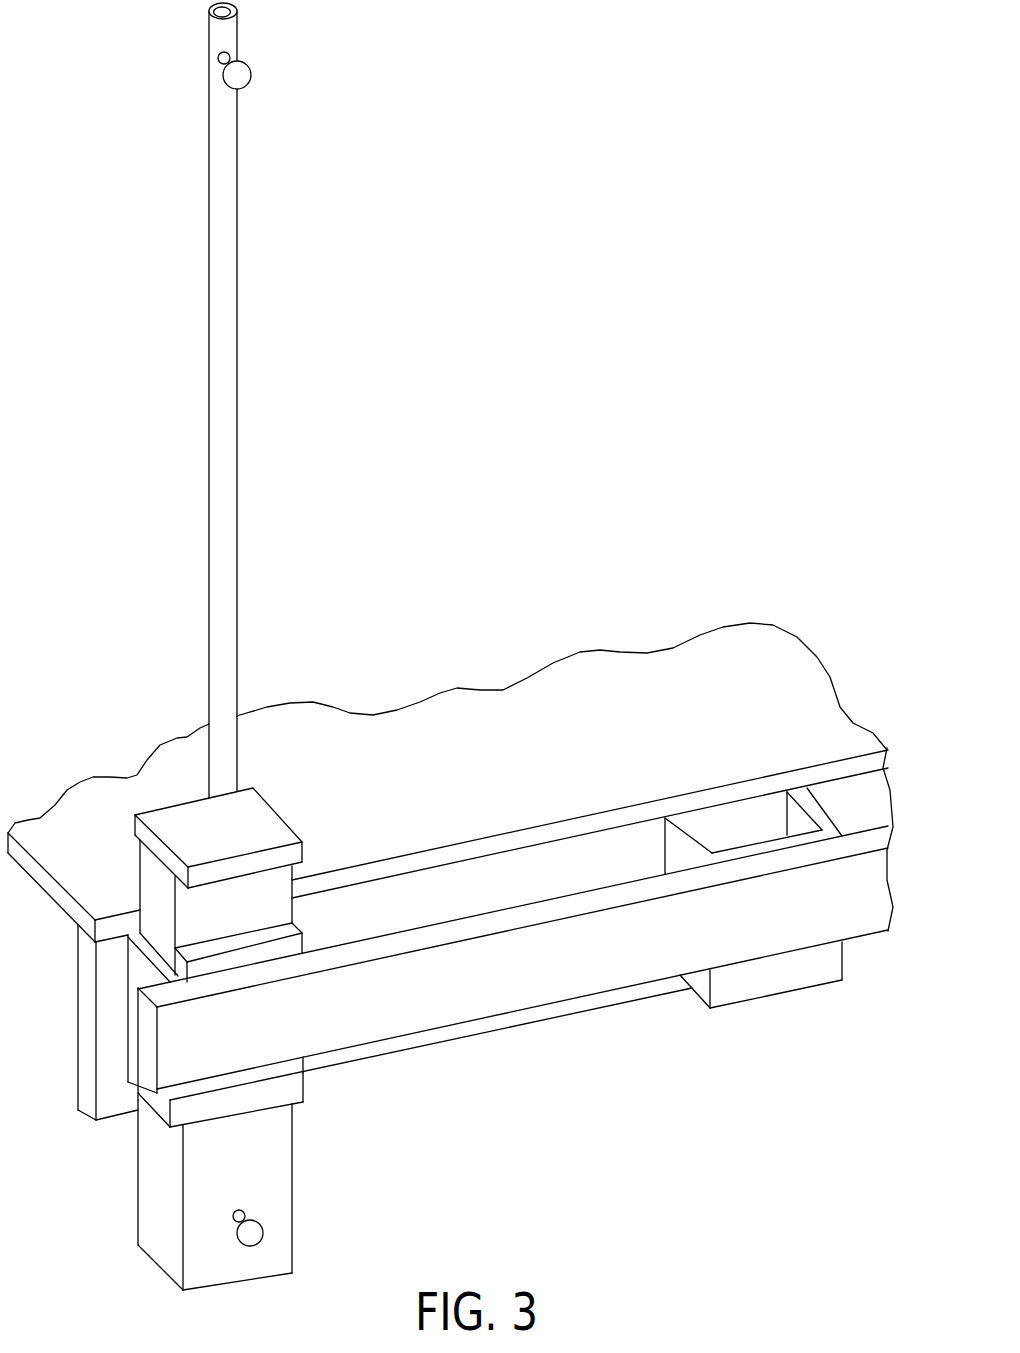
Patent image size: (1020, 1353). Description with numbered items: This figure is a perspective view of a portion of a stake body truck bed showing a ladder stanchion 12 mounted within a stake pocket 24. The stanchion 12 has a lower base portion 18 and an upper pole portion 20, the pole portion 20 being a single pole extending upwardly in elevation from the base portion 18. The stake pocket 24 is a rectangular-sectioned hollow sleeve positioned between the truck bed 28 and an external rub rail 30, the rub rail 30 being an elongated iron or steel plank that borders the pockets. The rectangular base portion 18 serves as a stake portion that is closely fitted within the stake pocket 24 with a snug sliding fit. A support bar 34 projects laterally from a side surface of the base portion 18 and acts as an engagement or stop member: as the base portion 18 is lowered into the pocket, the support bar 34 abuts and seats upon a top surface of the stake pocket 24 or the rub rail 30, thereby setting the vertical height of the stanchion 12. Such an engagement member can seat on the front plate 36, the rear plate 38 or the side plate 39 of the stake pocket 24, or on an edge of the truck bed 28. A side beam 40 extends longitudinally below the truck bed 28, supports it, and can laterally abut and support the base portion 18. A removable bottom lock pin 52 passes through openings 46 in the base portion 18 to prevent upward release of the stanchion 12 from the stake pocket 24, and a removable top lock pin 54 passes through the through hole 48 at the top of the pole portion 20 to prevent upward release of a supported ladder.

The ladder stanchion 12 is at (301, 784).
The lower base portion 18 is at (258, 1168).
The upper pole portion 20 is at (233, 564).
The stake pocket 24 is at (745, 818).
The truck bed 28 is at (724, 647).
The rub rail 30 is at (593, 967).
The support bar 34 is at (291, 962).
The front plate 36 is at (135, 1022).
The rear plate 38 is at (803, 803).
The side plate 39 is at (227, 1097).
The side beam 40 is at (88, 970).
The openings 46 is at (231, 1219).
The through hole 48 is at (219, 57).
The bottom lock pin 52 is at (253, 1240).
The top lock pin 54 is at (241, 83).